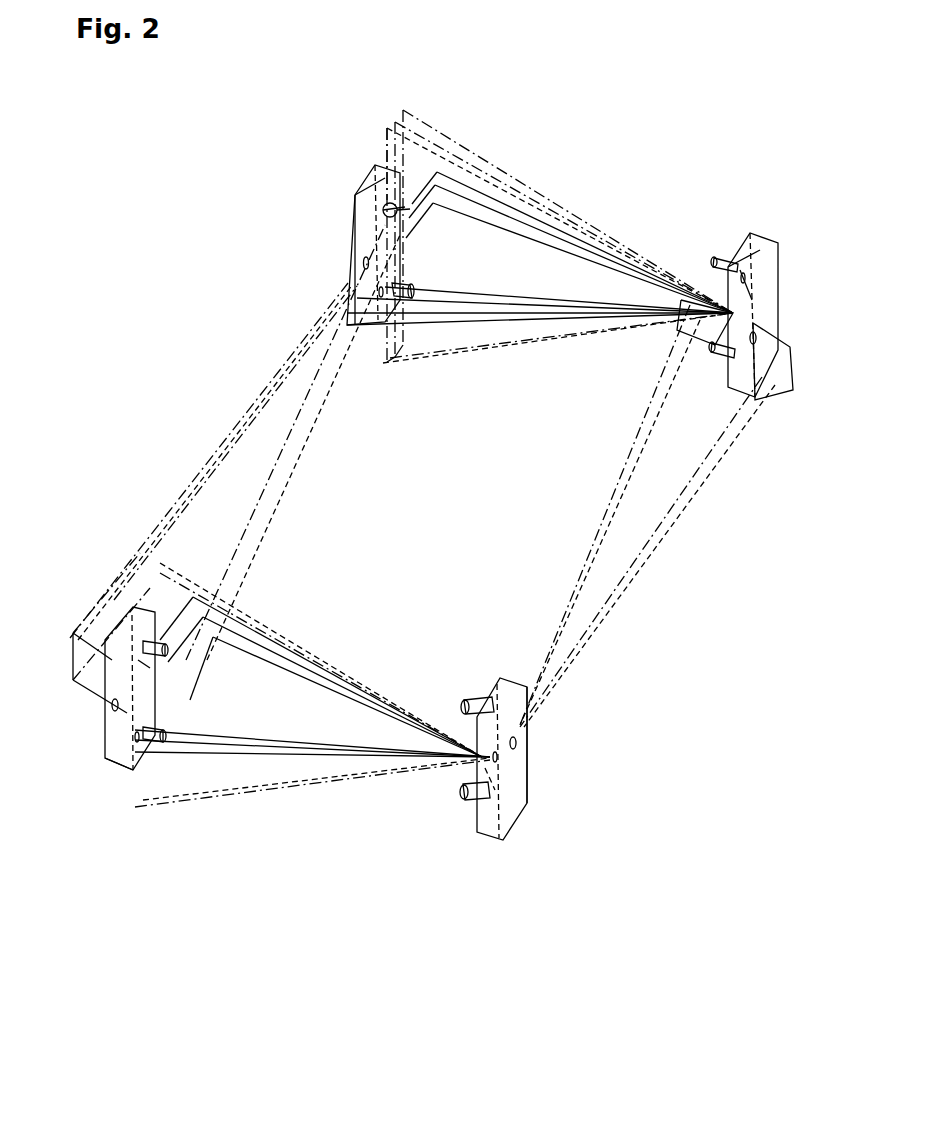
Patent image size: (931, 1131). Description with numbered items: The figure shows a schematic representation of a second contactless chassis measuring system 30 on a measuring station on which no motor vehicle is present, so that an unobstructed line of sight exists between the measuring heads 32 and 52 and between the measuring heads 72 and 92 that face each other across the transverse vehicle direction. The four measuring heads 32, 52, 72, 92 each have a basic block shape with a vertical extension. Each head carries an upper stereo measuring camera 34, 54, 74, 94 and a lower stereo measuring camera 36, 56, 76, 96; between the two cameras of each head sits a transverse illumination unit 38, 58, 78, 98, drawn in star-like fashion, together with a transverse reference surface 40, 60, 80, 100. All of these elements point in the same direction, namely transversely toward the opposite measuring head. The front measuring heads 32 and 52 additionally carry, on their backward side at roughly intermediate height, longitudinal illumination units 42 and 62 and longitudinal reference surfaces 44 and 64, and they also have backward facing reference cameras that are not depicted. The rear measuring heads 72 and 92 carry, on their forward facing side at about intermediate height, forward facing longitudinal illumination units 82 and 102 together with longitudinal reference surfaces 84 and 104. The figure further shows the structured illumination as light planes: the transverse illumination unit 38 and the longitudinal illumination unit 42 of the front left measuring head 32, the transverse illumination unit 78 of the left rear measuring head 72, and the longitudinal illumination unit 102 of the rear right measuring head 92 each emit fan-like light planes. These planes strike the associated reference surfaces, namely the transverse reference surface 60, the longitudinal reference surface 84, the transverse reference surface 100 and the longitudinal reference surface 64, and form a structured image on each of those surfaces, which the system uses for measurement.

The contactless chassis measuring system 30 is at (200, 210).
The front left measuring head 32 is at (487, 885).
The upper stereo measuring camera 34 is at (470, 703).
The lower stereo measuring camera 36 is at (465, 796).
The transverse illumination unit 38 is at (498, 758).
The transverse reference surface 40 is at (472, 775).
The longitudinal illumination unit 42 is at (518, 743).
The longitudinal reference surface 44 is at (515, 790).
The front measuring head 52 is at (99, 795).
The upper stereo measuring camera 54 is at (146, 648).
The lower stereo measuring camera 56 is at (162, 745).
The transverse illumination unit 58 is at (111, 705).
The transverse reference surface 60 is at (134, 738).
The longitudinal illumination unit 62 is at (142, 664).
The longitudinal reference surface 64 is at (116, 760).
The left rear measuring head 72 is at (688, 218).
The upper stereo measuring camera 74 is at (720, 258).
The lower stereo measuring camera 76 is at (713, 350).
The transverse illumination unit 78 is at (746, 292).
The transverse reference surface 80 is at (746, 276).
The longitudinal illumination unit 82 is at (757, 340).
The longitudinal reference surface 84 is at (757, 388).
The rear right measuring head 92 is at (338, 182).
The upper stereo measuring camera 94 is at (393, 203).
The lower stereo measuring camera 96 is at (415, 300).
The transverse illumination unit 98 is at (385, 218).
The transverse reference surface 100 is at (415, 250).
The longitudinal illumination unit 102 is at (362, 262).
The longitudinal reference surface 104 is at (378, 292).